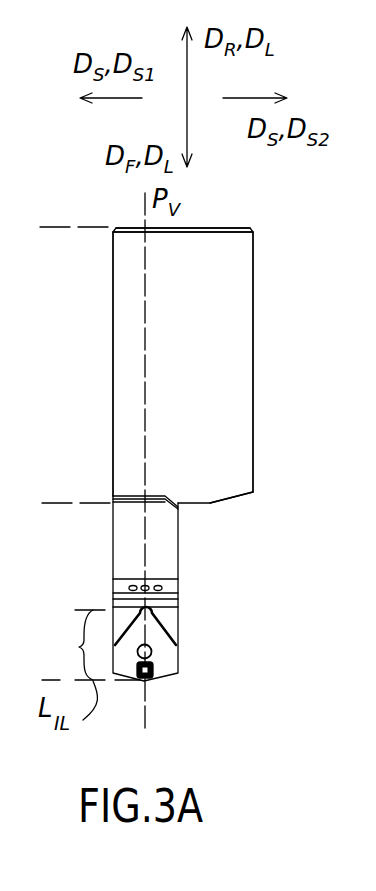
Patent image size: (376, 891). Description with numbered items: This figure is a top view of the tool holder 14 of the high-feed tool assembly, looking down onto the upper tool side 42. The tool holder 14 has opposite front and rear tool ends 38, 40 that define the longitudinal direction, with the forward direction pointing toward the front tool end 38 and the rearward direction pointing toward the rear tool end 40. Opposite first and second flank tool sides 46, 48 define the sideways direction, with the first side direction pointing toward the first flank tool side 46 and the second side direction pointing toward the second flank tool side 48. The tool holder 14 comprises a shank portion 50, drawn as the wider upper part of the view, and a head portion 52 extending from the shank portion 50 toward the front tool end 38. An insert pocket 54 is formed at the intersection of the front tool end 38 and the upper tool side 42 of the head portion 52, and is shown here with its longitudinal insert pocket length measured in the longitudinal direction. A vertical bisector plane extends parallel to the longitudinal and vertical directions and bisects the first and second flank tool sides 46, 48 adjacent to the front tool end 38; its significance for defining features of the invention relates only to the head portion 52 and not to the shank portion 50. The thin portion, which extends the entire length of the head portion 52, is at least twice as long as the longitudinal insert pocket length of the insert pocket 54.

The tool holder 14 is at (280, 240).
The front tool end 38 is at (145, 683).
The rear tool end 40 is at (224, 222).
The upper tool side 42 is at (375, 378).
The first flank tool side 46 is at (102, 323).
The second flank tool side 48 is at (263, 322).
The shank portion 50 is at (55, 227).
The head portion 52 is at (57, 503).
The insert pocket 54 is at (182, 650).